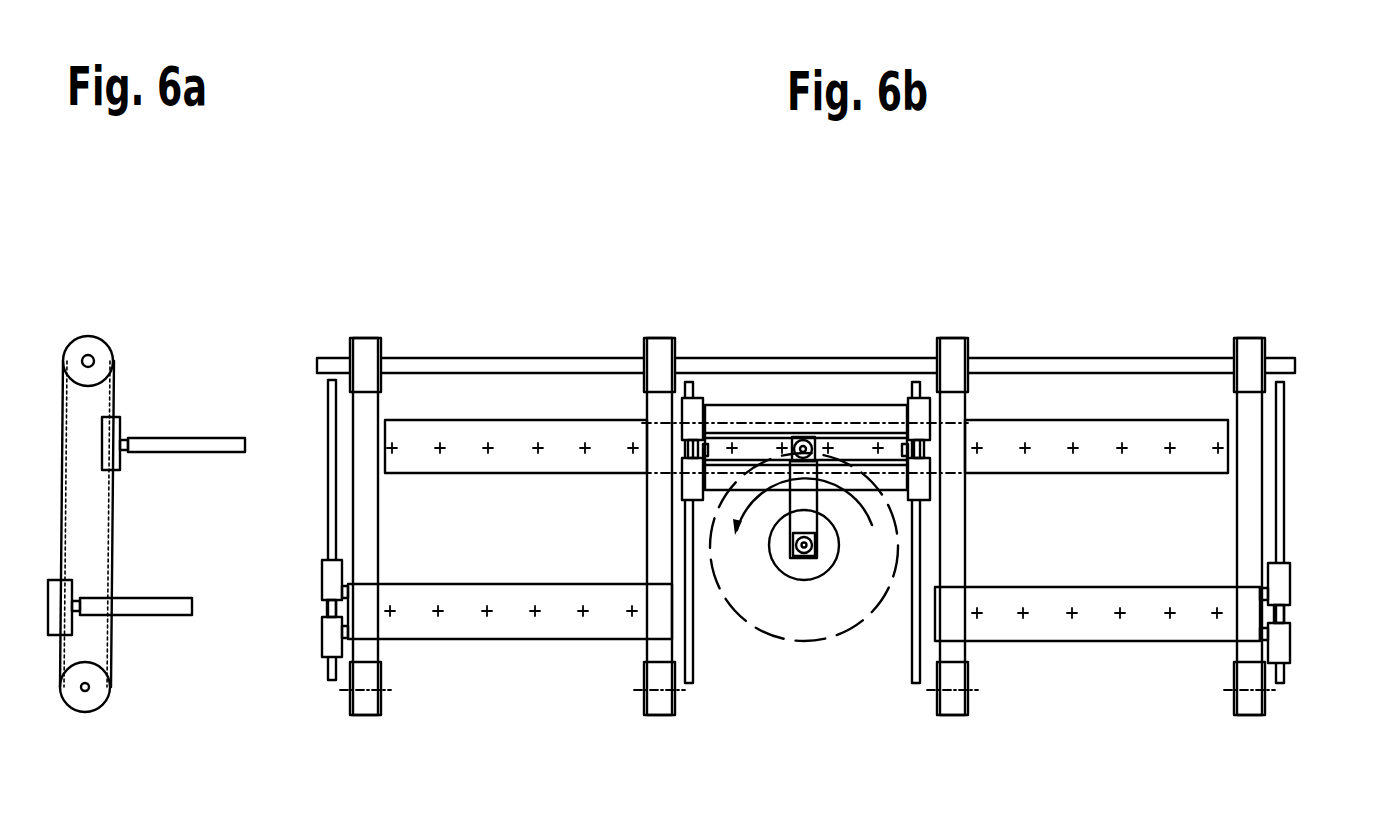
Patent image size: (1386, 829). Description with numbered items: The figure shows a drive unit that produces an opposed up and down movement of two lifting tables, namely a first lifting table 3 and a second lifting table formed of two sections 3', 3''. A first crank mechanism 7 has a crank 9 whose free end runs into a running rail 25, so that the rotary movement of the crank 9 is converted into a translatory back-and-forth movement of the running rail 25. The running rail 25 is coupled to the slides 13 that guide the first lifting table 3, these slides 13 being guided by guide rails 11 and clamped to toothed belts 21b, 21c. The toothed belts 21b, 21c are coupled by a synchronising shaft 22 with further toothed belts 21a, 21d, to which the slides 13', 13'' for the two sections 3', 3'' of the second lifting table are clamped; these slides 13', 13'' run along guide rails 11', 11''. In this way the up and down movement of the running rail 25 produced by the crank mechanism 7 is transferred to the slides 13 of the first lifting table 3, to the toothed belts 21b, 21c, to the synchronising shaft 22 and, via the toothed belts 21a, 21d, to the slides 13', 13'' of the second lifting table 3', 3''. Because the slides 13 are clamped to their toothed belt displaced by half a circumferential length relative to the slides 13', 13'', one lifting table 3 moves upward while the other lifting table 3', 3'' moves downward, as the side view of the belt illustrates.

In FIG. 6A, the lifting table 3 is at (173, 397).
In FIG. 6B, the lifting table 3 is at (806, 480).
In FIG. 6A, the section of the second lifting table 3' is at (127, 658).
In FIG. 6B, the section of the second lifting table 3' is at (510, 657).
In FIG. 6A, the section of the second lifting table 3'' is at (120, 607).
In FIG. 6B, the section of the second lifting table 3'' is at (1097, 664).
In FIG. 6B, the crank mechanism 7 is at (786, 664).
In FIG. 6B, the crank 9 is at (800, 528).
In FIG. 6B, the guide rail 11 is at (802, 566).
In FIG. 6B, the guide rail 11' is at (292, 530).
In FIG. 6B, the guide rail 11'' is at (1327, 532).
In FIG. 6B, the slide 13 is at (806, 388).
In FIG. 6B, the slide 13' is at (292, 608).
In FIG. 6B, the slide 13'' is at (1323, 613).
In FIG. 6B, the toothed belt 21a is at (366, 345).
In FIG. 6B, the toothed belt 21b is at (660, 345).
In FIG. 6B, the toothed belt 21c is at (952, 345).
In FIG. 6B, the toothed belt 21d is at (1248, 347).
In FIG. 6A, the synchronising shaft 22 is at (88, 358).
In FIG. 6B, the synchronising shaft 22 is at (1082, 370).
In FIG. 6B, the running rail 25 is at (872, 525).